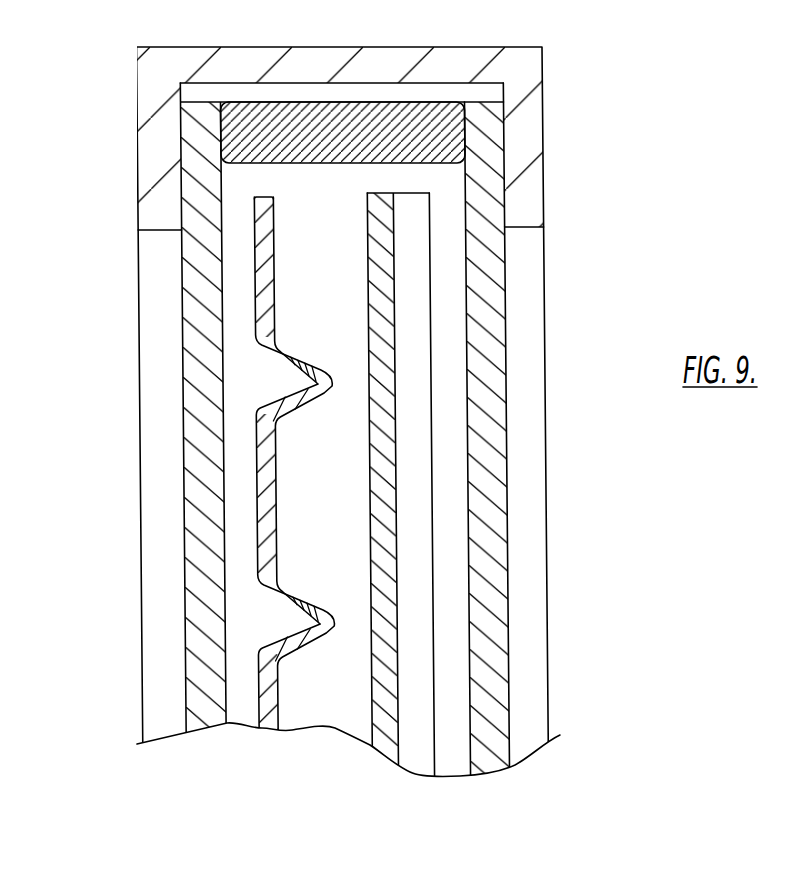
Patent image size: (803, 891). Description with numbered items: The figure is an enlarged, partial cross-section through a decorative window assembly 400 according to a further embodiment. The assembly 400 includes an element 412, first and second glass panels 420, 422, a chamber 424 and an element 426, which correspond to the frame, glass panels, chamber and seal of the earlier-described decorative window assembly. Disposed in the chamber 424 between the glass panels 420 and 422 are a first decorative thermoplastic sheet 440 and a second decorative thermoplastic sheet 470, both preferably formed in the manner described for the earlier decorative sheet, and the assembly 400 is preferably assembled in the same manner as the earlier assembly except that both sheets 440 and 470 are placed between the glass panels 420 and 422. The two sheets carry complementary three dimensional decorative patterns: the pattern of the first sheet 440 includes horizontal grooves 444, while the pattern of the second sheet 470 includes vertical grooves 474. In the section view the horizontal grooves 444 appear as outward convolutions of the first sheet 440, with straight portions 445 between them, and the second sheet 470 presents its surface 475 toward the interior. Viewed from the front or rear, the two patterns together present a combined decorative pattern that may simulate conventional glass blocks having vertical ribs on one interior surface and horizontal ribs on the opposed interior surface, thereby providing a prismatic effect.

The decorative window assembly 400 is at (618, 231).
The frame 412 is at (530, 112).
The glass panel 420 is at (195, 415).
The glass panel 422 is at (493, 442).
The chamber 424 is at (242, 190).
The seal 426 is at (435, 122).
The first decorative thermoplastic sheet 440 is at (242, 268).
The horizontal grooves 444 is at (275, 346).
The straight wall section 445 is at (256, 307).
The second decorative thermoplastic sheet 470 is at (432, 297).
The vertical grooves 474 is at (415, 232).
The outer surface of inner tube 475 is at (367, 258).